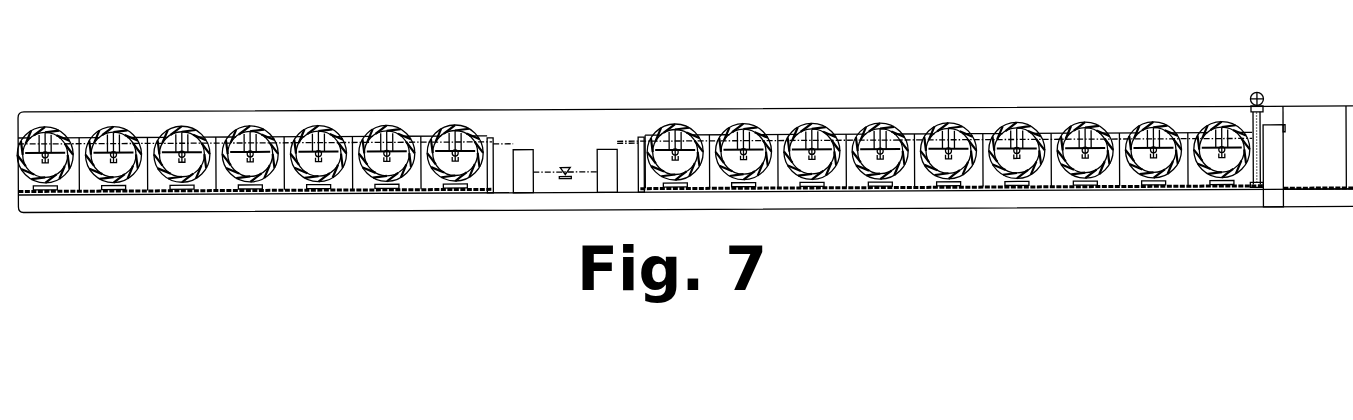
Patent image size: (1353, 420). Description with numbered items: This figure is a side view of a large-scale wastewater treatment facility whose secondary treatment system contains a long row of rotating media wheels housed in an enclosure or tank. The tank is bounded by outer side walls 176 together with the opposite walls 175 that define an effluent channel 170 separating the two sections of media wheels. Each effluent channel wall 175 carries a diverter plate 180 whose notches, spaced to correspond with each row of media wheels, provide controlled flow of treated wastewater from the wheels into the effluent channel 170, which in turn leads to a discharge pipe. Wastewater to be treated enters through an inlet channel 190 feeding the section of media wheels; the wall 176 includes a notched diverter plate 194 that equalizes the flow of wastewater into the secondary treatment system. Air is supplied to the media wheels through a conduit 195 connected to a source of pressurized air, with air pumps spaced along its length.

The effluent channel 170 is at (565, 169).
The effluent channel wall 175 is at (528, 157).
The diverter plate 180 is at (513, 149).
The outer side wall 176 is at (1273, 134).
The diverter plate 194 is at (1283, 112).
The conduit 195 is at (1257, 98).
The inlet channel 190 is at (1316, 116).